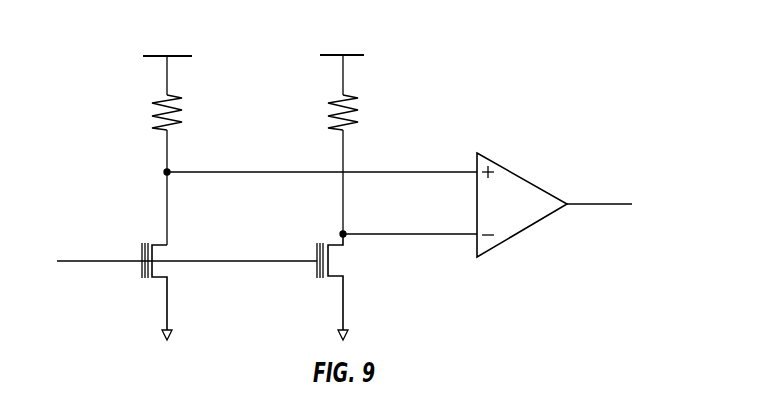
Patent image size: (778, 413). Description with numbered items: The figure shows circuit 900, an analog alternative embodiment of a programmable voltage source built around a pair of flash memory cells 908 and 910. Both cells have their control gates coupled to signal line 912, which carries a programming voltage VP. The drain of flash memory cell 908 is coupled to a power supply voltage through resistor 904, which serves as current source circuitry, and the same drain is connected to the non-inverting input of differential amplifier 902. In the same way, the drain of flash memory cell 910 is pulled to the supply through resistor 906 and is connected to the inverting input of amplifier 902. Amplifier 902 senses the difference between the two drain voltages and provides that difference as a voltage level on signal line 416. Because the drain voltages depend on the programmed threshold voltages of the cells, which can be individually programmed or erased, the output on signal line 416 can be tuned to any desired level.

The circuit 900 is at (631, 62).
The differential amplifier 902 is at (531, 197).
The resistor 904 is at (194, 114).
The resistor 906 is at (371, 144).
The flash memory cell 908 is at (133, 256).
The flash memory cell 910 is at (309, 287).
The signal line 912 is at (166, 249).
The signal line 416 is at (615, 183).